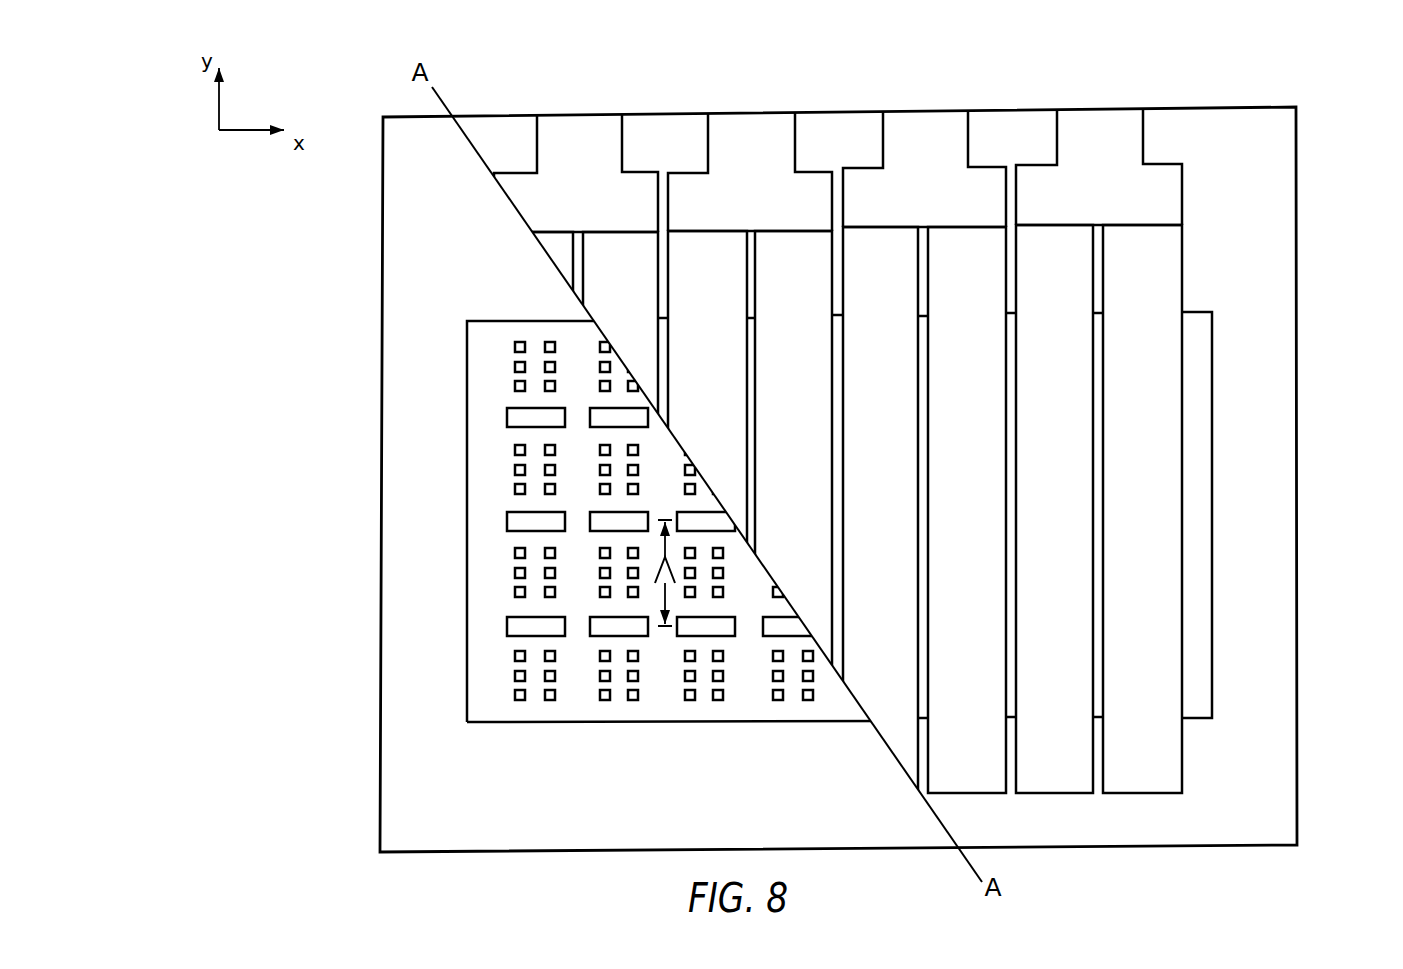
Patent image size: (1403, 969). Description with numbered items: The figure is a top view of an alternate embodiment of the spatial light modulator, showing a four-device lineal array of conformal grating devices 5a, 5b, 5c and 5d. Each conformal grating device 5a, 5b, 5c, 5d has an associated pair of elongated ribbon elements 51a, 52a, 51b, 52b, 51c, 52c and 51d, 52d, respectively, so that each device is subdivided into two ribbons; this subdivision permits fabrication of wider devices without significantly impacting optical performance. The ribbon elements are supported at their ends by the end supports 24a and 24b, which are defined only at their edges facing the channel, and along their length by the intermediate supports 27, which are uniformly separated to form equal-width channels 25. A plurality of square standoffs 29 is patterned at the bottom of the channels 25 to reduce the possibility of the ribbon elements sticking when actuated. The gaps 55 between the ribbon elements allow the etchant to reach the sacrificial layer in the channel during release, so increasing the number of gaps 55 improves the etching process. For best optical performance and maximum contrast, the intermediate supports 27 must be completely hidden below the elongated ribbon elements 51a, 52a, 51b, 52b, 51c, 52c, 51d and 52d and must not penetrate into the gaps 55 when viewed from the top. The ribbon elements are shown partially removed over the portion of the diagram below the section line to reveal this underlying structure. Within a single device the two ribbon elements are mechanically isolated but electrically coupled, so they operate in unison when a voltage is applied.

The conformal grating device 5a is at (568, 425).
The conformal grating device 5b is at (745, 425).
The conformal grating device 5c is at (919, 423).
The conformal grating device 5d is at (1094, 422).
The end support 24a is at (1192, 291).
The end support 24b is at (1192, 740).
The channel 25 is at (503, 366).
The intermediate support 27 is at (520, 417).
The square standoff 29 is at (522, 701).
The elongated ribbon element 51a is at (550, 262).
The elongated ribbon element 51b is at (685, 282).
The elongated ribbon element 51c is at (862, 278).
The elongated ribbon element 51d is at (1037, 278).
The elongated ribbon element 52a is at (605, 282).
The elongated ribbon element 52b is at (774, 282).
The elongated ribbon element 52c is at (952, 278).
The elongated ribbon element 52d is at (1125, 278).
The gap 55 is at (925, 648).